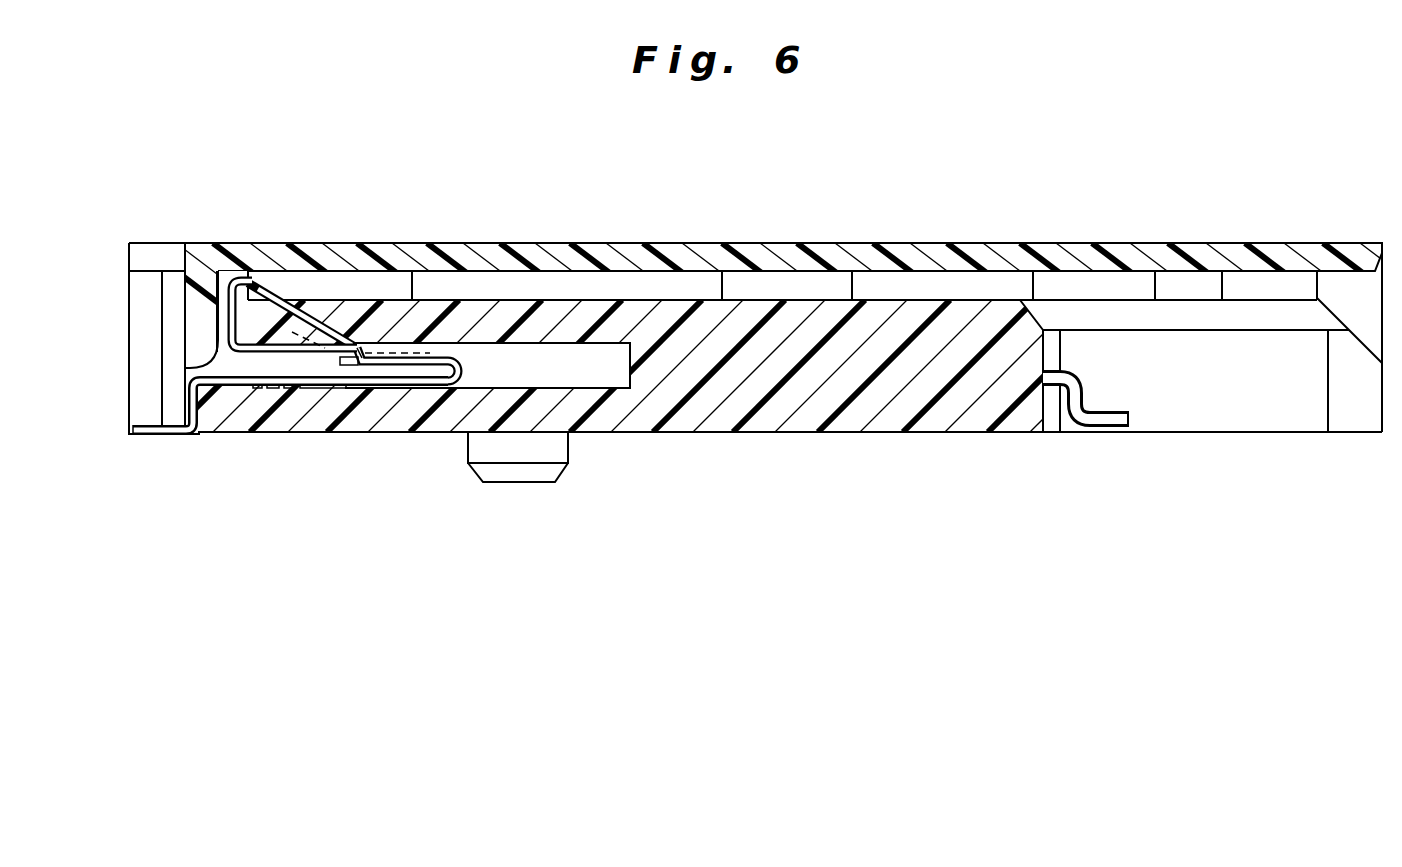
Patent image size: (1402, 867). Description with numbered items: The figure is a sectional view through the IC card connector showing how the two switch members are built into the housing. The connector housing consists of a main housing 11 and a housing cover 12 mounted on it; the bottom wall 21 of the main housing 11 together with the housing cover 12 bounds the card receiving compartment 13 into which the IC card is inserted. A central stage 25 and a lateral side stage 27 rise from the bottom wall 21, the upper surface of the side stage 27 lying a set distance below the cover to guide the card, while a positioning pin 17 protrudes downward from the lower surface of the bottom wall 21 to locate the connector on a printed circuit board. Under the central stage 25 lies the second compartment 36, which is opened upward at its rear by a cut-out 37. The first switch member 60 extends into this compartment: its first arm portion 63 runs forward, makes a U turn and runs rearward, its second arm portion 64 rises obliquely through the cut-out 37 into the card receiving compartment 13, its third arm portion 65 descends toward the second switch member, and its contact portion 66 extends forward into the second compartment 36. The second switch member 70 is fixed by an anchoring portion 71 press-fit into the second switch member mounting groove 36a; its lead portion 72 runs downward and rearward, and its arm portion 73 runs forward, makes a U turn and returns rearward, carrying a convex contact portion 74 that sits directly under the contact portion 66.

The main housing 11 is at (1224, 440).
The housing cover 12 is at (1172, 240).
The card receiving compartment 13 is at (612, 297).
The positioning pin 17 is at (538, 482).
The bottom wall 21 is at (1293, 410).
The central stage 25 is at (968, 298).
The lateral side stage 27 is at (1267, 299).
The second compartment 36 is at (597, 382).
The second switch member mounting groove 36a is at (318, 389).
The cut-out 37 is at (238, 270).
The first switch member 60 is at (284, 292).
The first arm portion 63 is at (402, 342).
The second arm portion 64 is at (297, 290).
The third arm portion 65 is at (215, 291).
The contact portion 66 is at (372, 340).
The second switch member 70 is at (158, 446).
The anchoring portion 71 is at (244, 388).
The lead portion 72 is at (183, 437).
The arm portion 73 is at (458, 350).
The contact portion 74 is at (362, 366).